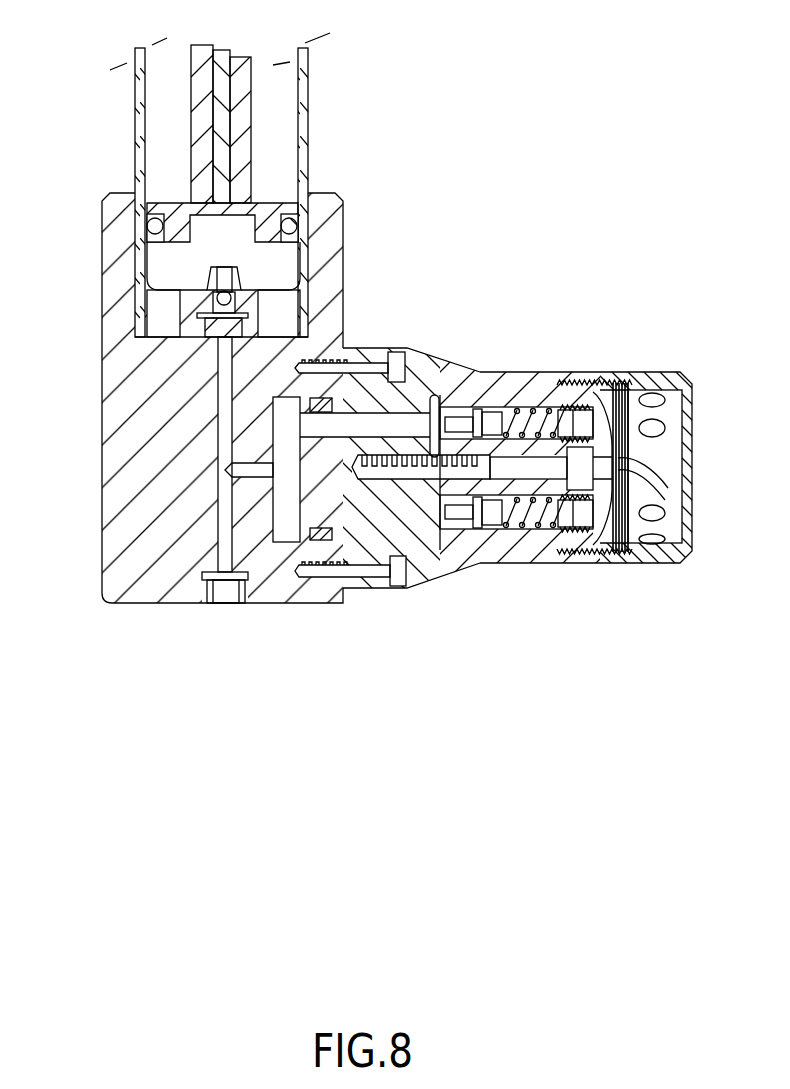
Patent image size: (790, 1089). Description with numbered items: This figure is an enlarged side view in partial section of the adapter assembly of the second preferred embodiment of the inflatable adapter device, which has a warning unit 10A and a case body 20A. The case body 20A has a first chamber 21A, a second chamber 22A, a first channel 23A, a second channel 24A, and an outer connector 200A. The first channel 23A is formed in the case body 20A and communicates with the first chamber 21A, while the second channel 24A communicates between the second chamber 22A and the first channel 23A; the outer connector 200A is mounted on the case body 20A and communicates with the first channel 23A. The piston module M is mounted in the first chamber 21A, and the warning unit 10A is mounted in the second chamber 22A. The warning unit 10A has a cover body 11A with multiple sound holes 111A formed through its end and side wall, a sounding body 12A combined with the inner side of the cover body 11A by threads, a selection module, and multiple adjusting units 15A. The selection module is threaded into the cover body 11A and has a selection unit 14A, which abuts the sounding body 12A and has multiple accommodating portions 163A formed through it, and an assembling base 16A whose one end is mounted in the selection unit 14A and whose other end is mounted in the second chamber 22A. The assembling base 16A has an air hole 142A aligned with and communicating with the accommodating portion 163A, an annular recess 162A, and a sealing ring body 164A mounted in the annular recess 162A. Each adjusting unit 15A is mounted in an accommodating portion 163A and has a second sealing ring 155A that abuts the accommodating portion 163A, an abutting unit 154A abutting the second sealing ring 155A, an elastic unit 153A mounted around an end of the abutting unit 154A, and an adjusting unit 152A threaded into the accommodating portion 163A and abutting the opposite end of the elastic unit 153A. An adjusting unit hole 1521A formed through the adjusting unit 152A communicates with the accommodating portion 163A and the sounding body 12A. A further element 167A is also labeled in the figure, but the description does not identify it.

The piston module M is at (205, 82).
The warning unit 10A is at (658, 438).
The cover body 11A is at (681, 368).
The sound holes 111A is at (655, 542).
The sounding body 12A is at (668, 490).
The selection unit 14A is at (525, 563).
The adjusting units 15A is at (612, 553).
The adjusting unit 152A is at (595, 390).
The adjusting unit hole 1521A is at (572, 395).
The elastic unit 153A is at (527, 407).
The abutting unit 154A is at (492, 410).
The second sealing ring 155A is at (477, 407).
The assembling base 16A is at (360, 400).
The annular recess 162A is at (305, 540).
The accommodating portions 163A is at (494, 535).
The sealing ring body 164A is at (335, 580).
The pin 167A is at (448, 372).
The air hole 142A is at (320, 405).
The case body 20A is at (125, 480).
The outer connector 200A is at (224, 592).
The first chamber 21A is at (152, 322).
The second chamber 22A is at (282, 405).
The first channel 23A is at (218, 422).
The second channel 24A is at (260, 470).